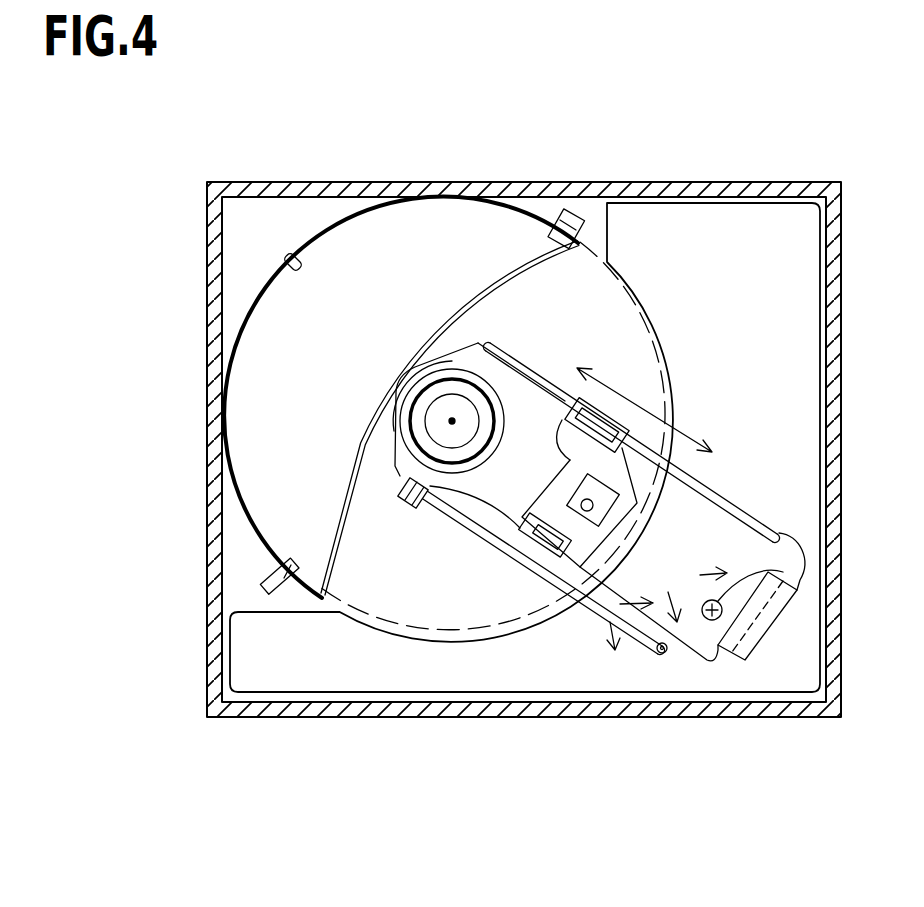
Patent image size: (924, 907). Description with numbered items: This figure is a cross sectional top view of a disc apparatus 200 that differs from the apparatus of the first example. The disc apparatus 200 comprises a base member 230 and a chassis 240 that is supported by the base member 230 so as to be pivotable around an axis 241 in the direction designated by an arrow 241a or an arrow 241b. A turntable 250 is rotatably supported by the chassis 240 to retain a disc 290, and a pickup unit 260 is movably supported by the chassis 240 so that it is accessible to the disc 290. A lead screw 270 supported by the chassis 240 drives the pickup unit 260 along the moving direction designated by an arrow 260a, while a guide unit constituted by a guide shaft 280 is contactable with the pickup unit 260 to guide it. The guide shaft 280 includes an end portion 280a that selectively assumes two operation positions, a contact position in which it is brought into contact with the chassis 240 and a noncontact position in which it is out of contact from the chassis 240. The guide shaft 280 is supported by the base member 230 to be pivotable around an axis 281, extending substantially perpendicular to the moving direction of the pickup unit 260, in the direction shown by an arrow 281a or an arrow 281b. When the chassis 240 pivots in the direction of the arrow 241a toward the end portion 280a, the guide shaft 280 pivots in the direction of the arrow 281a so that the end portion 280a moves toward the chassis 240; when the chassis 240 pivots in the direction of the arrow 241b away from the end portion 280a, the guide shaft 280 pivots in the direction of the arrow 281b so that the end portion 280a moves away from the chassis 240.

The disc apparatus 200 is at (541, 72).
The base member 230 is at (744, 183).
The chassis 240 is at (541, 348).
The axis 241 is at (790, 532).
The arrow 241a is at (668, 596).
The arrow 241b is at (700, 575).
The turntable 250 is at (413, 395).
The pickup unit 260 is at (551, 503).
The arrow 260a is at (705, 425).
The lead screw 270 is at (707, 500).
The guide shaft 280 is at (480, 567).
The end portion 280a is at (405, 512).
The axis 281 is at (660, 655).
The arrow 281a is at (632, 610).
The arrow 281b is at (605, 625).
The disc 290 is at (634, 296).